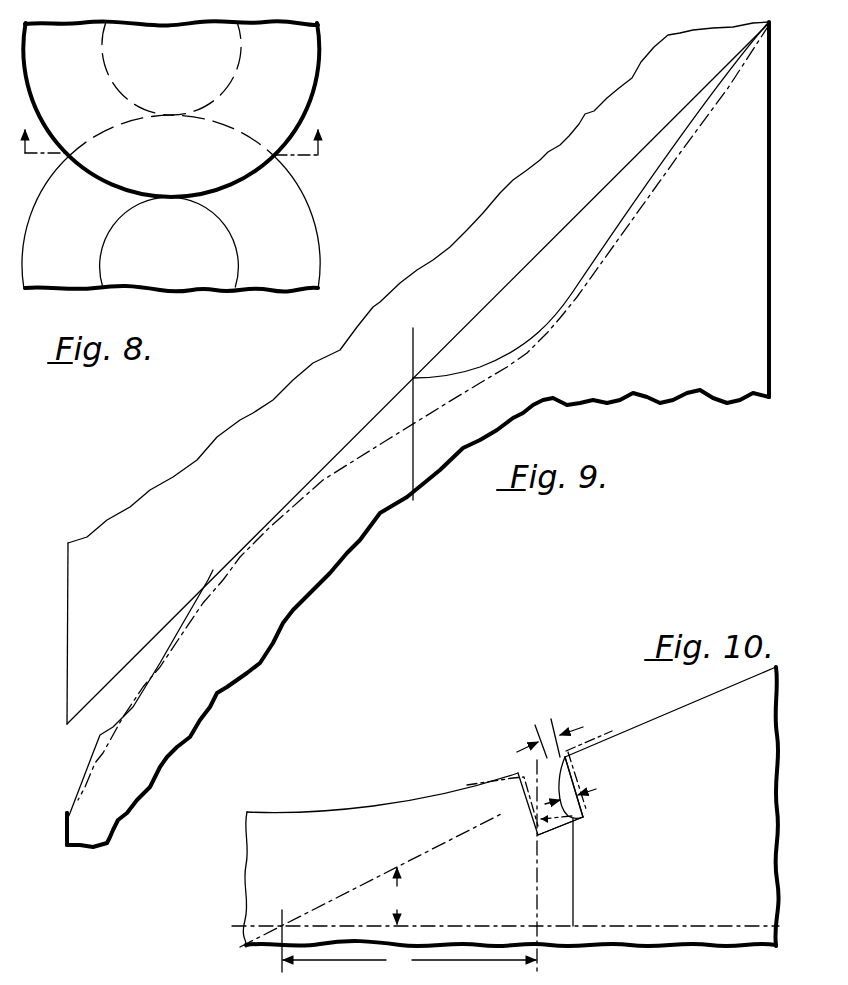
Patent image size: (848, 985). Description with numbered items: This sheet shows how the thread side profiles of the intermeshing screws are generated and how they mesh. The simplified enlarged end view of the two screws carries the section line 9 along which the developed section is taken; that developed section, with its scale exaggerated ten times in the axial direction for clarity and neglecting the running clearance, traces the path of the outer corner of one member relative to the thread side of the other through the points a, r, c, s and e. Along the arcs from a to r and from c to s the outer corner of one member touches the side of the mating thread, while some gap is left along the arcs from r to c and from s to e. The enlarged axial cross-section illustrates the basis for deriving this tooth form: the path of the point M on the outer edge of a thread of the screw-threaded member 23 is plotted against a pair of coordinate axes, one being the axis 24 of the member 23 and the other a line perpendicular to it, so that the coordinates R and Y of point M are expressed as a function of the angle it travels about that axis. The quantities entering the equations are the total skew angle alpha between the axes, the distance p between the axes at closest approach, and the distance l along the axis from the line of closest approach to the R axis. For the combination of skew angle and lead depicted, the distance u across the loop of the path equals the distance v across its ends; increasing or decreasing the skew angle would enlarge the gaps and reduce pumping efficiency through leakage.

In FIG. 8, the section line 9— 9 is at (174, 153).
In FIG. 9, the point a of the path a is at (428, 370).
In FIG. 9, the point r of the path r is at (728, 72).
In FIG. 9, the point c of the path c is at (411, 378).
In FIG. 9, the point s of the path s is at (213, 576).
In FIG. 9, the point e of the path e is at (69, 825).
In FIG. 10, the screw-threaded member 23 is at (665, 718).
In FIG. 10, the axis 24 is at (621, 928).
In FIG. 10, the distance between axes at closest approach p is at (282, 924).
In FIG. 10, the total skew angle between axes alpha is at (393, 896).
In FIG. 10, the distance along axis from line P to R axis l is at (410, 866).
In FIG. 10, the coordinate Y is at (533, 831).
In FIG. 10, the point M is at (587, 819).
In FIG. 10, the coordinate R is at (576, 891).
In FIG. 10, the distance across the loop of the path u is at (571, 787).
In FIG. 10, the distance across the ends of the path v is at (550, 738).